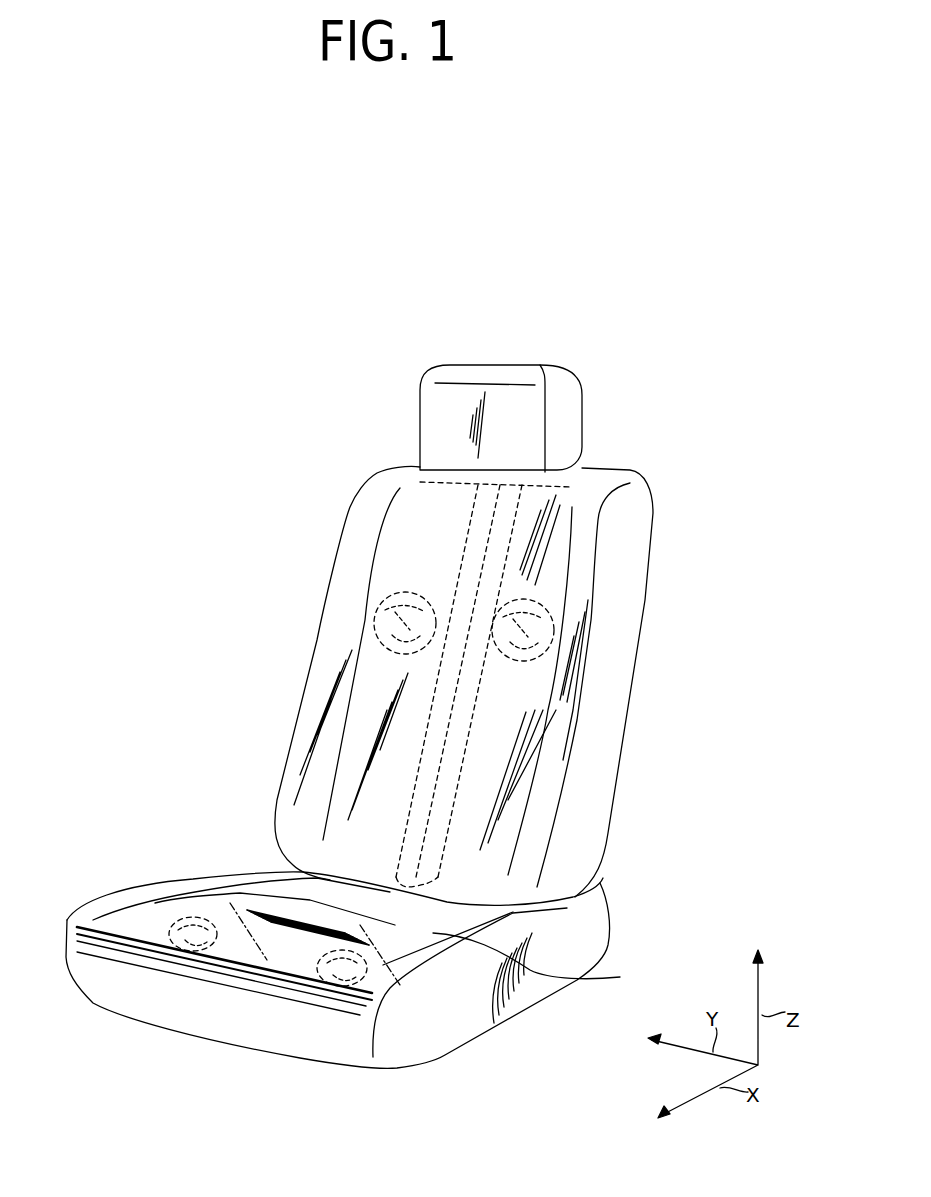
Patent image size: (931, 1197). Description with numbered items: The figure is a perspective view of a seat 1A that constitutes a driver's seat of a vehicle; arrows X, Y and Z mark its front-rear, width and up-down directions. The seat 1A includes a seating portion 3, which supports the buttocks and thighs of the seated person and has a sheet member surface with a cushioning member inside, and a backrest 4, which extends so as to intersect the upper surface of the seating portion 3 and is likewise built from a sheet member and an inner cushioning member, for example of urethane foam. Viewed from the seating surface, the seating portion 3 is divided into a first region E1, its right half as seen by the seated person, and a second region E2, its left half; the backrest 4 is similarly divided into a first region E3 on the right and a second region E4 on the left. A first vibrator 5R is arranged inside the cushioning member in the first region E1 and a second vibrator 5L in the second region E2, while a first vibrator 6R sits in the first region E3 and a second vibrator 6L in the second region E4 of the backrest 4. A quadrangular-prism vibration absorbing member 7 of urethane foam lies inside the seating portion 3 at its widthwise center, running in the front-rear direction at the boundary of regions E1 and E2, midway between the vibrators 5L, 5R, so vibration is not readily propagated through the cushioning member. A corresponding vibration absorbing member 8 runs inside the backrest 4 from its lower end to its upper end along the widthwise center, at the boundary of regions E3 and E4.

The seat 1A is at (403, 736).
The seating portion 3 is at (477, 1003).
The backrest 4 is at (622, 698).
The vibrator (first vibrator) 5R is at (173, 955).
The vibrator (second vibrator) 5L is at (323, 990).
The vibrator (first vibrator) 6R is at (370, 596).
The vibrator (second vibrator) 6L is at (565, 594).
The vibration absorbing member 7 is at (347, 908).
The vibration absorbing member 8 is at (437, 710).
The first region E1 is at (203, 900).
The second region E2 is at (620, 977).
The first region E3 is at (420, 557).
The second region E4 is at (538, 570).